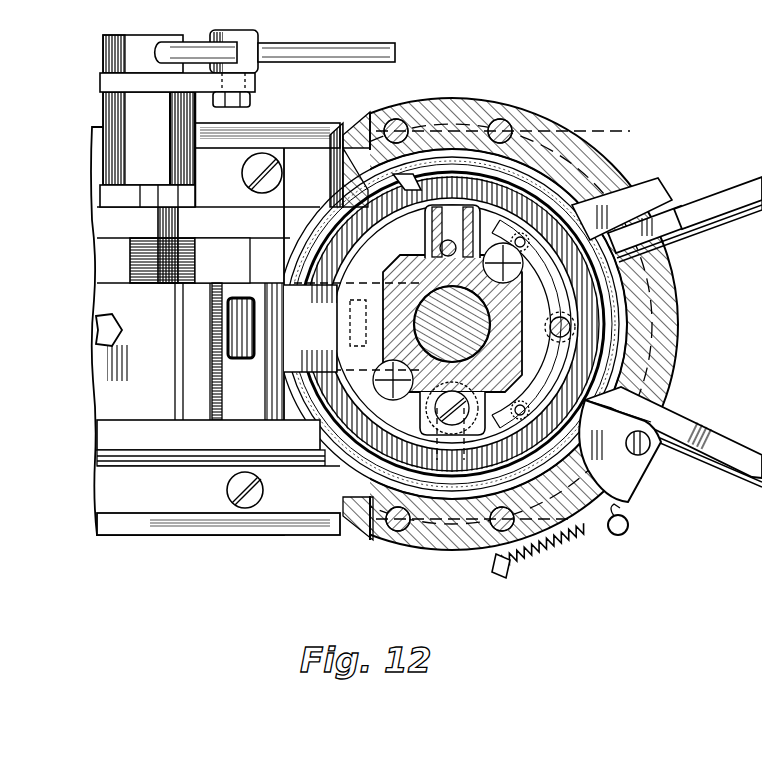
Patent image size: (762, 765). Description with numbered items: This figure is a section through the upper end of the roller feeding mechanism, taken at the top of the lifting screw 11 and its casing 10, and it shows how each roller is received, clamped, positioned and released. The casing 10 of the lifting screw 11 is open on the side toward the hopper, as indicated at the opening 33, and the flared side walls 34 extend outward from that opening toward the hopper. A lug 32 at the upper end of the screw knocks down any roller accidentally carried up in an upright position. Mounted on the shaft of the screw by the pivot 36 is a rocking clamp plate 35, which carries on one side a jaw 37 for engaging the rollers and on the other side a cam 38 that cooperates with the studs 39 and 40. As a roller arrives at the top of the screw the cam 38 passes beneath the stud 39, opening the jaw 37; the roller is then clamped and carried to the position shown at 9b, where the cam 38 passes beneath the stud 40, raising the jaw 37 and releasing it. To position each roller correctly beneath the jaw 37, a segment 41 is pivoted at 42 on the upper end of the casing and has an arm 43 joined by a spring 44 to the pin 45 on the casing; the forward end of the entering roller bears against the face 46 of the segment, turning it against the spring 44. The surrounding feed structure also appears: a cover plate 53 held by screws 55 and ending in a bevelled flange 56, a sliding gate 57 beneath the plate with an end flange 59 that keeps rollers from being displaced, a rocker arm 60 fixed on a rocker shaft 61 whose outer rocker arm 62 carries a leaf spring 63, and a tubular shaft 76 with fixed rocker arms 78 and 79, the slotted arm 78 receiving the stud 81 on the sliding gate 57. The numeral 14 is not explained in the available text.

The casing 10 is at (555, 128).
The lifting screw 11 is at (478, 440).
The hub 14 is at (421, 382).
The lug 32 is at (408, 178).
The opening 33 is at (618, 268).
The flared side walls 34 is at (718, 222).
The rocking clamp plate 35 is at (662, 183).
The pivot 36 is at (585, 192).
The jaw 37 is at (240, 375).
The cam 38 is at (560, 352).
The stud 39 is at (305, 380).
The stud 40 is at (567, 330).
The segment 41 is at (615, 433).
The pivot 42 is at (648, 450).
The arm 43 is at (625, 532).
The spring 44 is at (542, 560).
The pin 45 is at (500, 565).
The face 46 is at (591, 397).
The cover plate 53 is at (187, 331).
The screws 55 is at (105, 340).
The bevelled flange 56 is at (200, 345).
The sliding gate 57 is at (130, 268).
The end flange 59 is at (218, 250).
The rocker arm 60 is at (278, 253).
The rocker shaft 61 is at (321, 422).
The rocker arm 62 is at (140, 515).
The leaf spring 63 is at (125, 466).
The tubular shaft 76 is at (122, 143).
The rocker arm 78 is at (120, 195).
The rocker arm 79 is at (130, 80).
The stud 81 is at (165, 225).
The roller position 9b is at (215, 320).